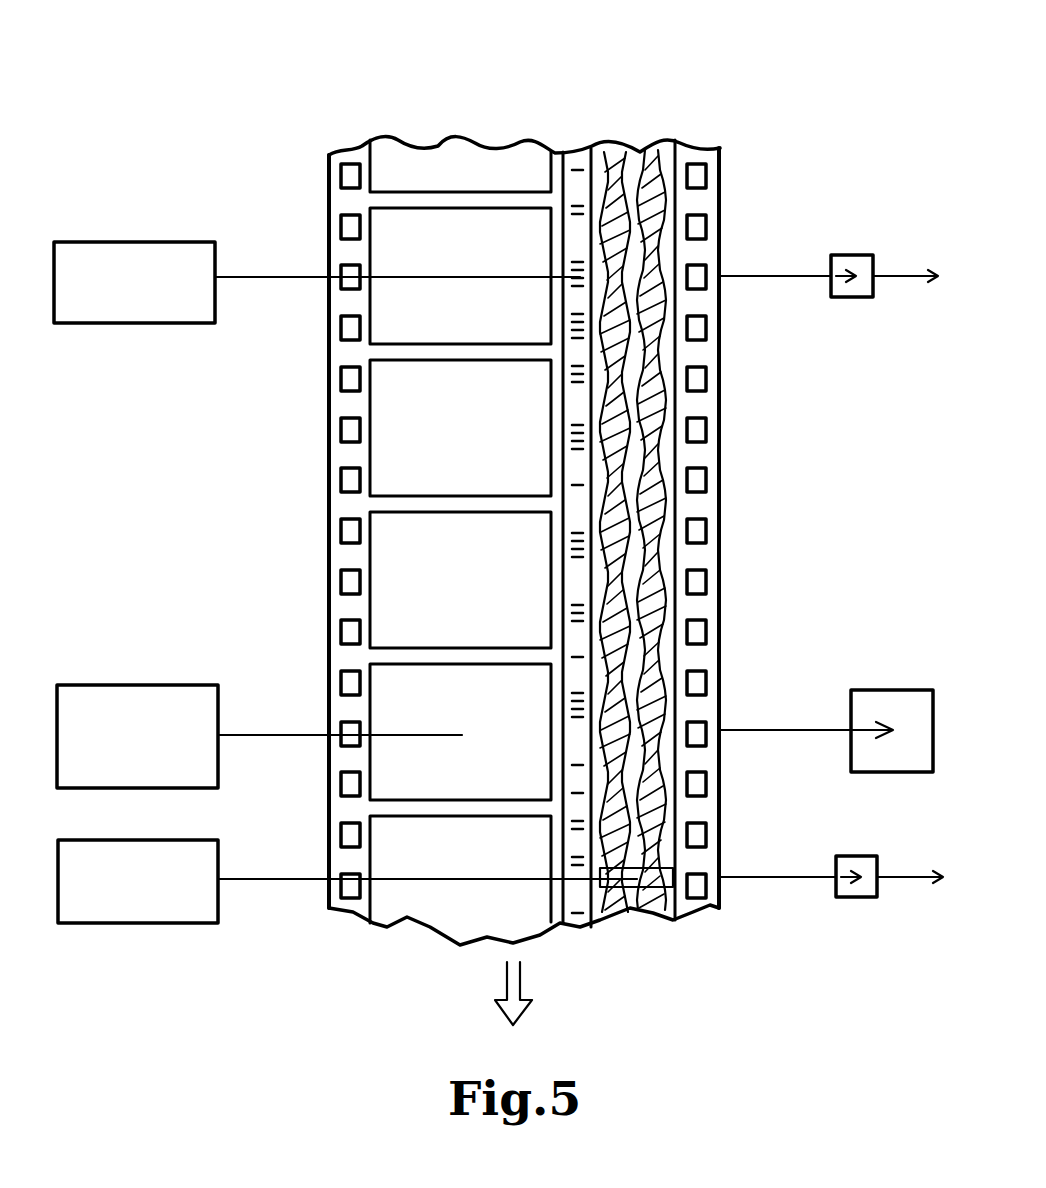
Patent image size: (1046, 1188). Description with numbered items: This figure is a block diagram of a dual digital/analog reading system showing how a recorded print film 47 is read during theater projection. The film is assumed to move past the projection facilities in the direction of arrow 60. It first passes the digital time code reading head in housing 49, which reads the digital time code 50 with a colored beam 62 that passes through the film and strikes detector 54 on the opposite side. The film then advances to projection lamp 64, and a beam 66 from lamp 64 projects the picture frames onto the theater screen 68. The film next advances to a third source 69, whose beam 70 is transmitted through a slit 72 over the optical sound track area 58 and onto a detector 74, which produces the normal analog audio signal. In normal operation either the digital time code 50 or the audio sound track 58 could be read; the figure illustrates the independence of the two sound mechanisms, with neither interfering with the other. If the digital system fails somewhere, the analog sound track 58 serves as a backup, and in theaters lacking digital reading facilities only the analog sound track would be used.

The motion picture film strip 47 is at (440, 108).
The housing 49 is at (117, 242).
The digital time code 50 is at (574, 144).
The detector 54 is at (847, 255).
The optical sound track area 58 is at (633, 155).
The arrow 60 is at (520, 977).
The colored beam 62 is at (270, 277).
The projection lamp 64 is at (117, 685).
The beam 66 is at (277, 733).
The theater screen 68 is at (887, 690).
The third source 69 is at (113, 925).
The beam 70 is at (270, 882).
The slit 72 is at (640, 866).
The detector 74 is at (855, 898).